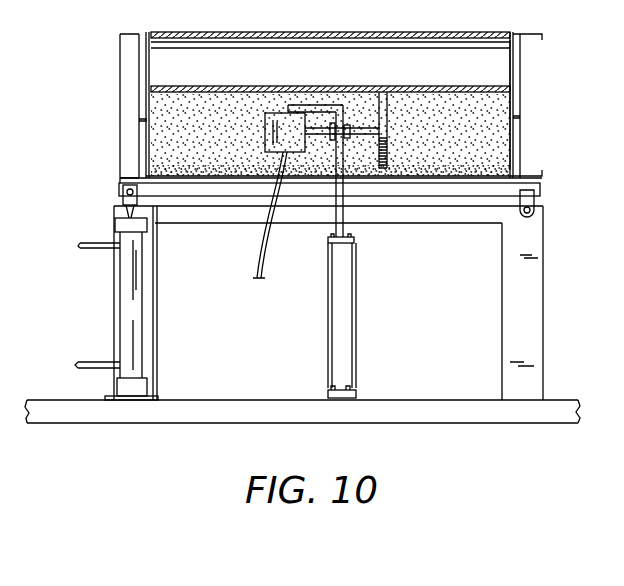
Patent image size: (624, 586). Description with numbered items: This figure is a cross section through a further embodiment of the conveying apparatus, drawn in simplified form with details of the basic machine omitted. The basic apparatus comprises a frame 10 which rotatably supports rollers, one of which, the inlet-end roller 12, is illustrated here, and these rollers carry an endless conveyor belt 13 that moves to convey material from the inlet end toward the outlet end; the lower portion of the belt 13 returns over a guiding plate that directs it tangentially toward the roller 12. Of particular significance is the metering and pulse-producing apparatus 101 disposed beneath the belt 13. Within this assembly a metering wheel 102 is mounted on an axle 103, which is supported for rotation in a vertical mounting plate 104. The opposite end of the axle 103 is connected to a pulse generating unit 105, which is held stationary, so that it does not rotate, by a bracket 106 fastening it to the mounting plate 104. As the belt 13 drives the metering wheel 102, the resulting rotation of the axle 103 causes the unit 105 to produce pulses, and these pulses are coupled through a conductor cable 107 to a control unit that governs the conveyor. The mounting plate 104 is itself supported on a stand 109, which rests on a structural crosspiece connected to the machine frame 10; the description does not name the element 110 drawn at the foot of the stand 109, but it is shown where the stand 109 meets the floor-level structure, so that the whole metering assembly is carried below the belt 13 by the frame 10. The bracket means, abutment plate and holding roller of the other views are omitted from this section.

The frame 10 is at (522, 90).
The roller 12 is at (514, 164).
The conveyor belt 13 is at (238, 39).
The metering and pulse-producing apparatus 101 is at (206, 134).
The metering wheel 102 is at (391, 108).
The axle 103 is at (363, 127).
The vertical mounting plate 104 is at (343, 214).
The pulse generating unit 105 is at (264, 119).
The bracket 106 is at (314, 97).
The conductor cable 107 is at (256, 250).
The stand 109 is at (357, 290).
The cylinder base 110 is at (360, 400).